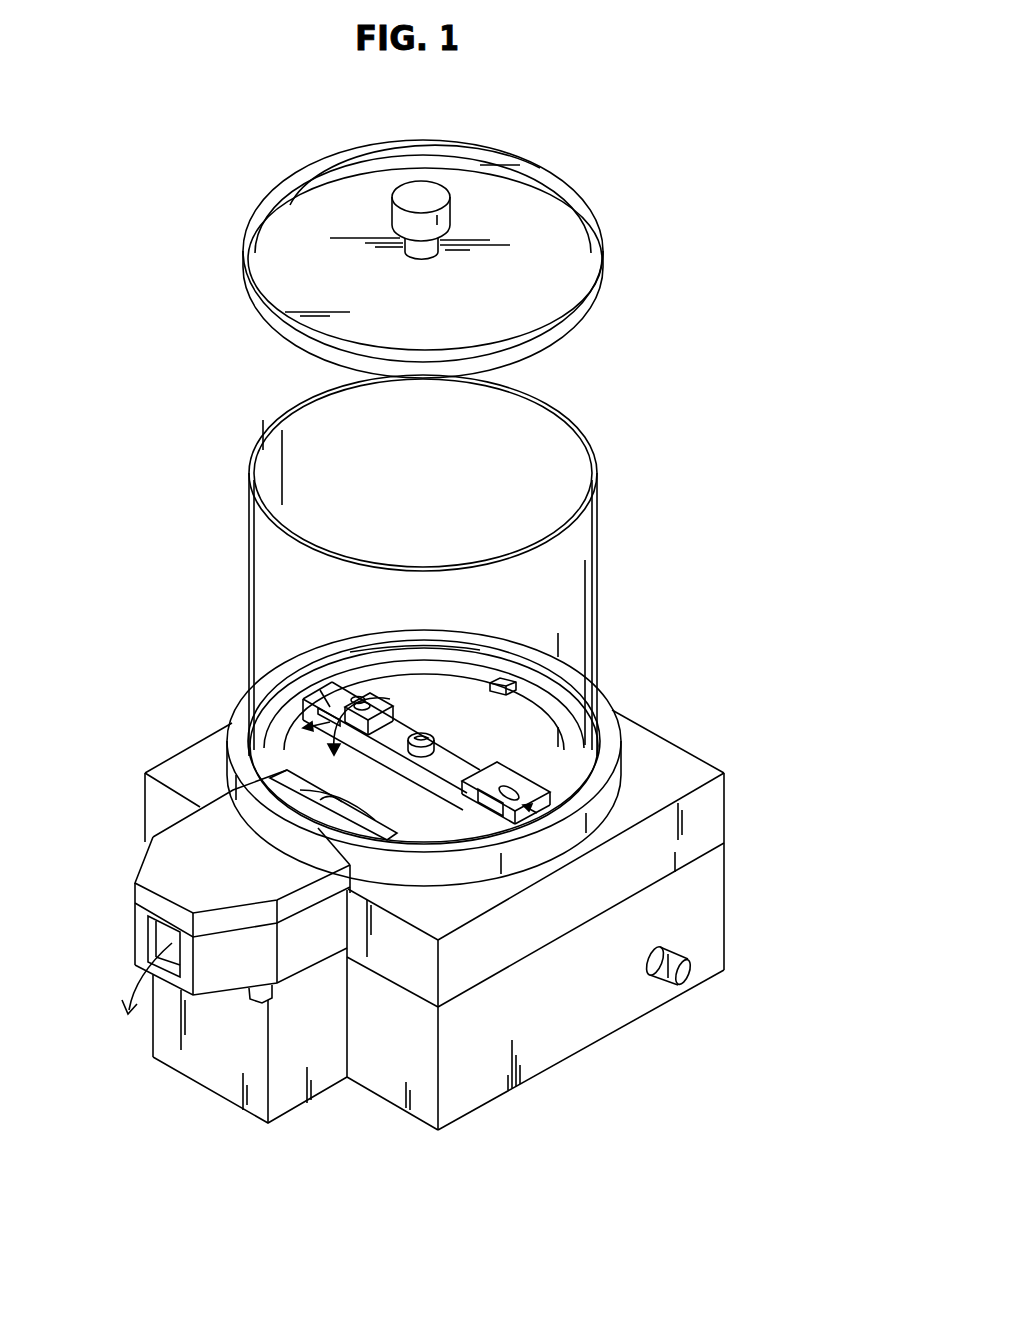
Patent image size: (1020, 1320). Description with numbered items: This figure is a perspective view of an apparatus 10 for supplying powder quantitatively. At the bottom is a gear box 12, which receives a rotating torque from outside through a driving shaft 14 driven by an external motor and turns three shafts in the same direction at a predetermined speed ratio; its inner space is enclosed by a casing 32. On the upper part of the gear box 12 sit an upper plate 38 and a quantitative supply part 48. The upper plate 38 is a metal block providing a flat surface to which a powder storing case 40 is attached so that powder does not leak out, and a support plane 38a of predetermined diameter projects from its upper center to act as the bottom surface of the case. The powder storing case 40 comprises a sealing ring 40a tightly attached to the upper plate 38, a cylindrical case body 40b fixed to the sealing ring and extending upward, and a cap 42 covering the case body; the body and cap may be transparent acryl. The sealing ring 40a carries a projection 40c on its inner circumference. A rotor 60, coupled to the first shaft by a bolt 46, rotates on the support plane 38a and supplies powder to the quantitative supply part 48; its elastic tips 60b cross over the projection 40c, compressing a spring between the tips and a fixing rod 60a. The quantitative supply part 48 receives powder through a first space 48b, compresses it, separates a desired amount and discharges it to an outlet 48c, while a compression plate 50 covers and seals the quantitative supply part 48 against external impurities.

The apparatus for supplying powder quantitatively 10 is at (234, 400).
The gear box 12 is at (434, 928).
The driving shaft 14 is at (666, 986).
The casing 32 is at (574, 1002).
The upper plate 38 is at (511, 758).
The support plane 38a is at (543, 745).
The powder storing case 40 is at (477, 609).
The sealing ring 40a is at (607, 753).
The case body 40b is at (584, 424).
The projection 40c is at (545, 650).
The cap 42 is at (582, 174).
The bolt 46 is at (517, 688).
The quantitative supply part 48 is at (272, 927).
The first space 48b is at (320, 800).
The outlet 48c is at (165, 930).
The compression plate 50 is at (182, 857).
The rotor 60 is at (479, 714).
The fixing rod 60a is at (551, 781).
The elastic tips 60b is at (345, 705).